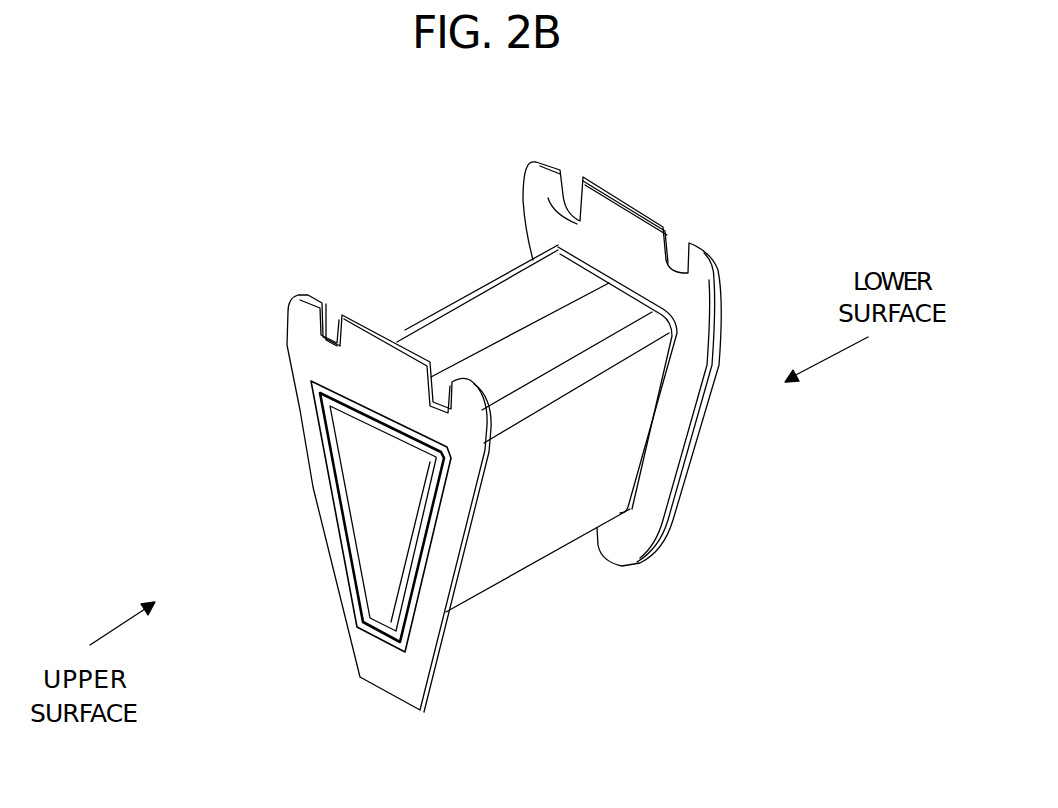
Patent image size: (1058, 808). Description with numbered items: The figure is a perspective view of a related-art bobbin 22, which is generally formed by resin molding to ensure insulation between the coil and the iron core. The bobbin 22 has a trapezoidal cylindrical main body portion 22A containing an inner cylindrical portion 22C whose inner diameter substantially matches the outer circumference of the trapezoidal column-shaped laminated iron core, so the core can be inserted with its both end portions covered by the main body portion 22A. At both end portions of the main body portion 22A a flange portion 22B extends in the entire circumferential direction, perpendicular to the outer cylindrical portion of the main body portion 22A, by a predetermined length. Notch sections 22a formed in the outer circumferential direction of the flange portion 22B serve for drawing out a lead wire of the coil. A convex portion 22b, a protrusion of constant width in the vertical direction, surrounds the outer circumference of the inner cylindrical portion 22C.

The bobbin 22 is at (412, 210).
The notch section 22a is at (332, 324).
The main body portion 22A is at (527, 430).
The flange portion 22B is at (412, 673).
The convex portion 22b is at (360, 607).
The inner cylindrical portion 22C is at (360, 457).